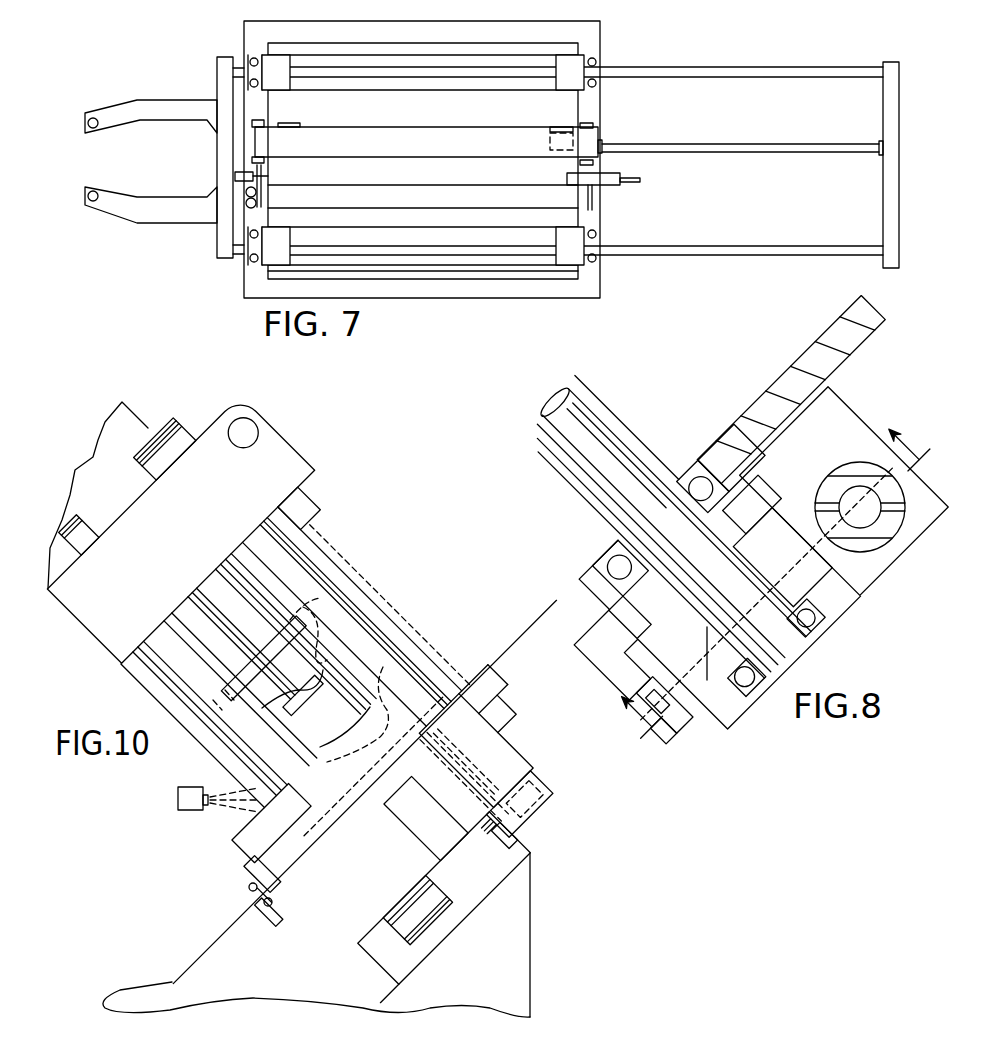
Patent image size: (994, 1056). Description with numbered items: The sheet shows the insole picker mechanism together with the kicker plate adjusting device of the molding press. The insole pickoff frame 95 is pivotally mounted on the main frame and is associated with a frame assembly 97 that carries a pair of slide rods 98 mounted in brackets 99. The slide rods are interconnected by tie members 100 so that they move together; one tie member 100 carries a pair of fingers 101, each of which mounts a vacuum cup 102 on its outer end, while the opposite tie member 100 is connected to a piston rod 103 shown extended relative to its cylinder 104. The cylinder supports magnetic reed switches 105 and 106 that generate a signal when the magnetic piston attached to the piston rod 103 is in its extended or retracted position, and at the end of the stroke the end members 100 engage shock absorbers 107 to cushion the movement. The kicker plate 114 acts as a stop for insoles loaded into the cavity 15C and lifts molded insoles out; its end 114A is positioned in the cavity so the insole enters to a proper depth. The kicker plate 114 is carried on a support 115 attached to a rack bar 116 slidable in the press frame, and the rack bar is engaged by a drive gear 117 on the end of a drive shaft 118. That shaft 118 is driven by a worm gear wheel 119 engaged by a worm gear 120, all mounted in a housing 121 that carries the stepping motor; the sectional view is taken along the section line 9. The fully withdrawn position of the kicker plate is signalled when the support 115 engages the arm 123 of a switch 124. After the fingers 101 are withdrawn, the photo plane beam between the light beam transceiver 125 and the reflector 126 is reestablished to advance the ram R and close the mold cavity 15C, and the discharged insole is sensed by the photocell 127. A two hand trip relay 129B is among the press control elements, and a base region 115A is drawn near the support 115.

In FIG. 7, the insole pickoff frame 95 is at (585, 18).
In FIG. 7, the frame assembly 97 is at (252, 32).
In FIG. 7, the slide rods 98 is at (734, 70).
In FIG. 7, the brackets 99 is at (574, 76).
In FIG. 7, the tie members 100 is at (217, 153).
In FIG. 7, the fingers 101 is at (150, 104).
In FIG. 7, the vacuum cup 102 is at (96, 114).
In FIG. 7, the piston rod 103 is at (758, 152).
In FIG. 7, the cylinder 104 is at (475, 148).
In FIG. 7, the magnetic reed switch 105 is at (291, 125).
In FIG. 7, the magnetic reed switch 106 is at (672, 120).
In FIG. 7, the shock absorbers 107 is at (290, 175).
In FIG. 10, the light beam transceiver 125 is at (306, 500).
In FIG. 10, the end of kicker plate 114A is at (232, 772).
In FIG. 10, the ram R is at (243, 623).
In FIG. 10, the cavity 15C is at (336, 723).
In FIG. 10, the drive shaft 118 is at (503, 735).
In FIG. 8, the drive shaft 118 is at (604, 440).
In FIG. 10, the reflector 126 is at (471, 688).
In FIG. 10, the two hand trip relay 129B is at (503, 700).
In FIG. 10, the drive gear 117 is at (418, 757).
In FIG. 10, the housing 121 is at (549, 786).
In FIG. 8, the housing 121 is at (905, 538).
In FIG. 10, the worm gear 120 is at (548, 800).
In FIG. 8, the worm gear 120 is at (843, 495).
In FIG. 10, the worm gear wheel 119 is at (523, 838).
In FIG. 8, the worm gear wheel 119 is at (697, 648).
In FIG. 10, the rack bar 116 is at (325, 850).
In FIG. 10, the support 115 is at (243, 866).
In FIG. 10, the base plate edge 115A is at (200, 988).
In FIG. 10, the kicker plate 114 is at (223, 853).
In FIG. 10, the arm of switch 123 is at (254, 888).
In FIG. 10, the switch 124 is at (280, 918).
In FIG. 10, the photocell 127 is at (178, 800).
In FIG. 8, the section line 9- 9 is at (776, 586).